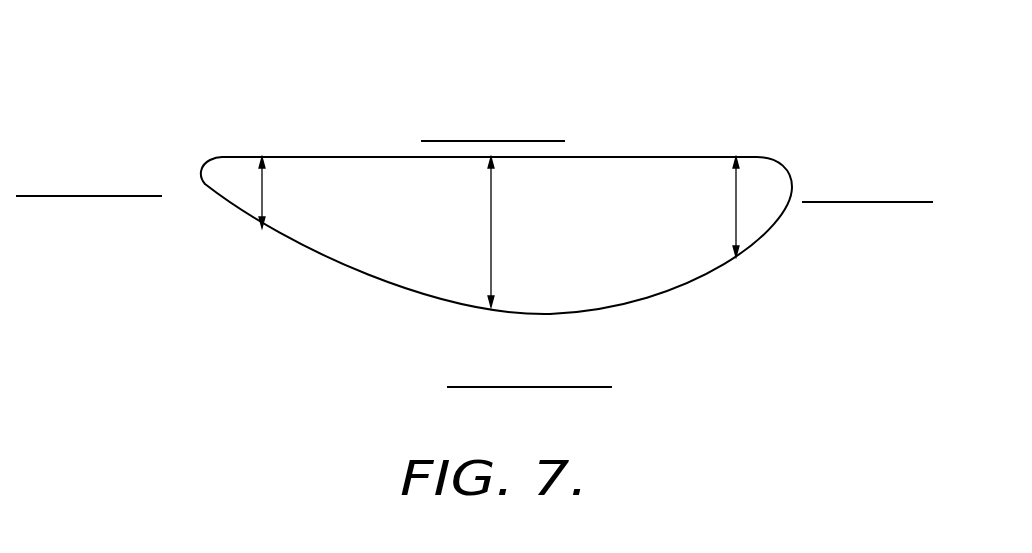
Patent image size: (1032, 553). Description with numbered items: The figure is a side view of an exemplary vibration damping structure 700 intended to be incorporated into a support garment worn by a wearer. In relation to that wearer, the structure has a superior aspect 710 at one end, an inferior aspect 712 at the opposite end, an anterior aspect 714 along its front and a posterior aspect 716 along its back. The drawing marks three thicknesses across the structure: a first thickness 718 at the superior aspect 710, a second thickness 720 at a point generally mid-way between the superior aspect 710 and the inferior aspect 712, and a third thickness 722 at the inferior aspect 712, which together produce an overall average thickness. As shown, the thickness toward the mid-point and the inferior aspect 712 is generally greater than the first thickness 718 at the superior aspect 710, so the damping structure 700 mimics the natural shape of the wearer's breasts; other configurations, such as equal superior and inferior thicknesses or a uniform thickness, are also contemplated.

The vibration damping structure 700 is at (220, 72).
The superior aspect 710 is at (106, 168).
The inferior aspect 712 is at (872, 172).
The anterior aspect 714 is at (500, 112).
The posterior aspect 716 is at (570, 362).
The first thickness 718 is at (262, 193).
The second thickness 720 is at (491, 230).
The third thickness 722 is at (736, 208).